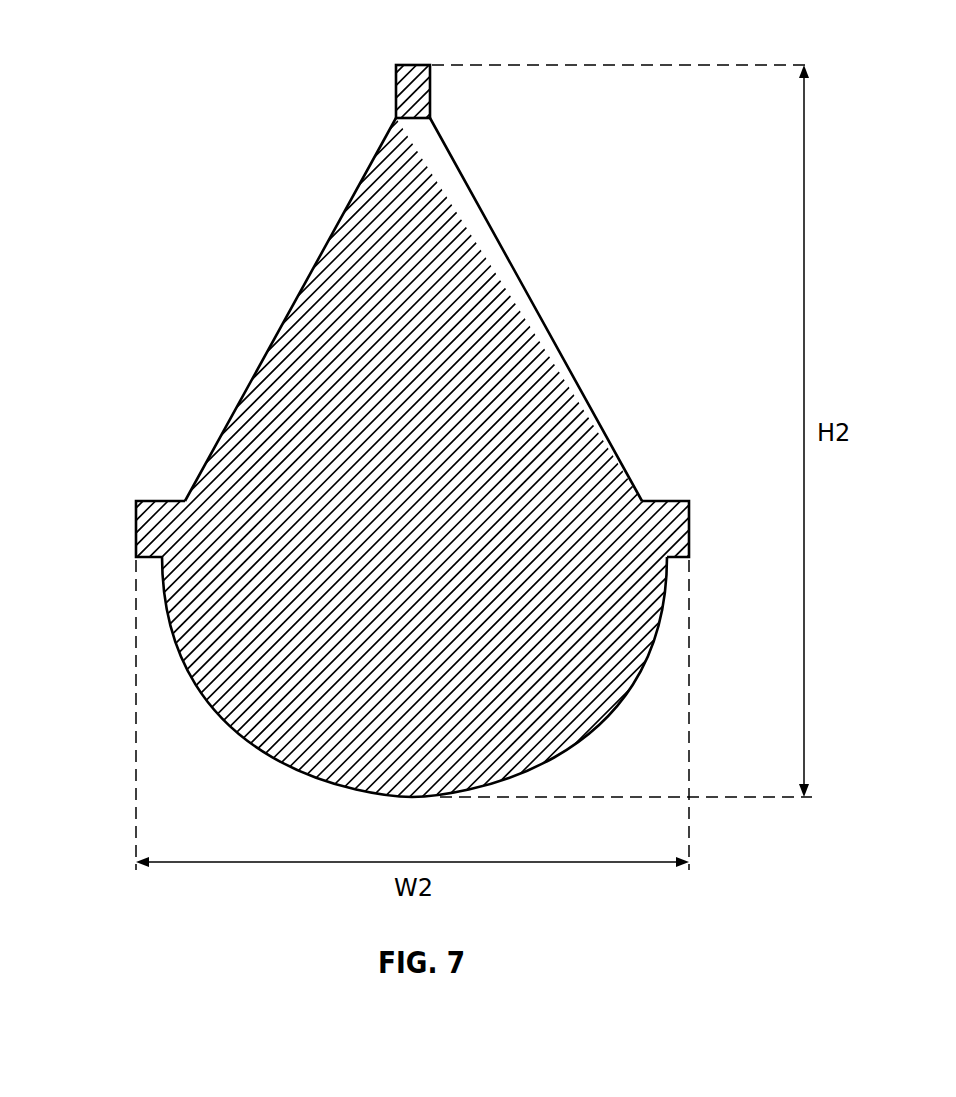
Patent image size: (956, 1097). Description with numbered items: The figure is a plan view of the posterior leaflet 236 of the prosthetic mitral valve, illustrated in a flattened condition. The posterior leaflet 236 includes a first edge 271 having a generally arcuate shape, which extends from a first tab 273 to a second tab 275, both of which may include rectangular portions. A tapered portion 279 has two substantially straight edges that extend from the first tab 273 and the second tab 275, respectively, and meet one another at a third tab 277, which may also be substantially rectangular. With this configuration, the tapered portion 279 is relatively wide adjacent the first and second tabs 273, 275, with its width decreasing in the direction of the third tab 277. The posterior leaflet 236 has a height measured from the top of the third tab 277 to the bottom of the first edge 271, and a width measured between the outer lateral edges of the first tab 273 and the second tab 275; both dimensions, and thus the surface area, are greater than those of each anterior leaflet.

The posterior leaflet 236 is at (144, 74).
The first edge 271 is at (530, 771).
The first tab 273 is at (150, 525).
The second tab 275 is at (680, 523).
The third tab 277 is at (418, 80).
The tapered portion 279 is at (320, 284).